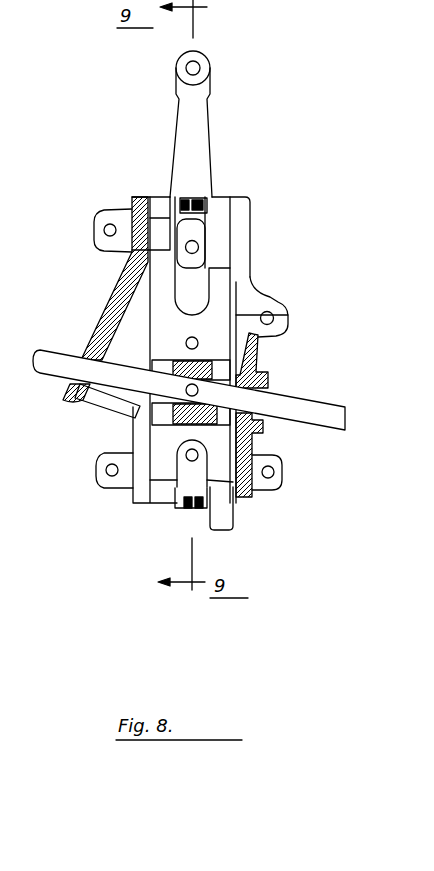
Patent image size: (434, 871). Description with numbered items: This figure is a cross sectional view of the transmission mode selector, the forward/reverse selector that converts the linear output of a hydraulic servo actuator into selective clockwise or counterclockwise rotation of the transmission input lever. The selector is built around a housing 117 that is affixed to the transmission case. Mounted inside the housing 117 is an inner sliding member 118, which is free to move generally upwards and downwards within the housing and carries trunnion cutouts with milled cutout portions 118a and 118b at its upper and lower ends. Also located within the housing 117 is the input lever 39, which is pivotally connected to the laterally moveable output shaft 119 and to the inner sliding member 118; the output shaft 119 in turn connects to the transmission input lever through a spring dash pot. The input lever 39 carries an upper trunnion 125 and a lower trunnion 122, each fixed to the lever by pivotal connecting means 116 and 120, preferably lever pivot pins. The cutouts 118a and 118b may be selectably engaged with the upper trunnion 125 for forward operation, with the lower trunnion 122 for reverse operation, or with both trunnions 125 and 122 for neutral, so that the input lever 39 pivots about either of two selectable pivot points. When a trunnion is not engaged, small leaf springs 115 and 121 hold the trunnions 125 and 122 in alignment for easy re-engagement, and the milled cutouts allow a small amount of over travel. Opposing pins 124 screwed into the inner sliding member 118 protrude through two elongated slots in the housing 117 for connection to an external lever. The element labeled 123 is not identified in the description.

The input lever 39 is at (178, 138).
The leaf spring 115 is at (208, 199).
The lever pivot pin 116 is at (198, 244).
The housing 117 is at (252, 272).
The inner sliding member 118 is at (276, 313).
The upper trunnion cutout 118a is at (131, 249).
The lower trunnion cutout 118b is at (214, 502).
The output shaft 119 is at (302, 398).
The lever pivot pin 120 is at (204, 463).
The leaf spring 121 is at (172, 506).
The lower trunnion 122 is at (186, 458).
The clamp block 123 is at (131, 415).
The opposing pins 124 is at (186, 340).
The upper trunnion 125 is at (180, 241).